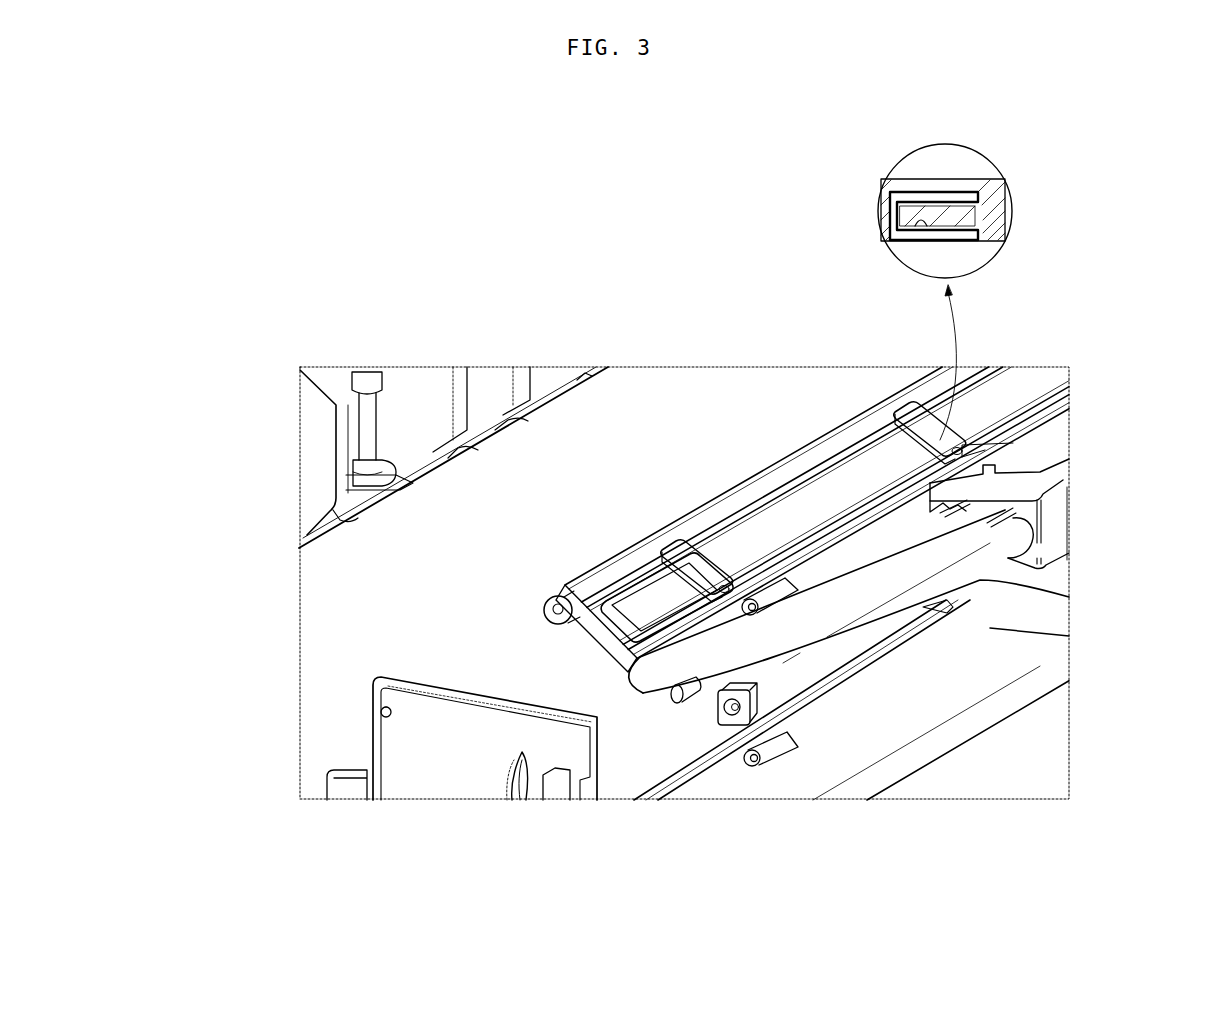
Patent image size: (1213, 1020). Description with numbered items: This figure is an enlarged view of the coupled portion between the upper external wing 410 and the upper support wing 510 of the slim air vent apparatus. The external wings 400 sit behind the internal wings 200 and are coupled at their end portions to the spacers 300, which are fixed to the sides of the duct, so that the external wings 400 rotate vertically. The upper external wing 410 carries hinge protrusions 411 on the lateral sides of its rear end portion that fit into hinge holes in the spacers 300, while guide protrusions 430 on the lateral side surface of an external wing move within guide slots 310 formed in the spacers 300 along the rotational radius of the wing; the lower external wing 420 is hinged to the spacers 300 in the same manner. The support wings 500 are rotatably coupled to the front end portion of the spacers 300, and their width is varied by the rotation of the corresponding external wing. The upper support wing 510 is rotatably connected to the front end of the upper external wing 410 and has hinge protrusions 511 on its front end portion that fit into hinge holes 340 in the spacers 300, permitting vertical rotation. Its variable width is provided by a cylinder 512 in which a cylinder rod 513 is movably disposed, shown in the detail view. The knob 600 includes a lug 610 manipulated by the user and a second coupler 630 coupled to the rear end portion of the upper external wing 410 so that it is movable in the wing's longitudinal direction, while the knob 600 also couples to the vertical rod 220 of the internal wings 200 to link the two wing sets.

The internal wings 200 is at (427, 393).
The vertical rod 220 is at (368, 431).
The spacers 300 is at (428, 770).
The guide slots 310 is at (513, 798).
The hinge holes 340 is at (380, 712).
The external wings 400 is at (952, 759).
The upper external wing 410 is at (907, 553).
The hinge protrusions 411 is at (731, 714).
The lower external wing 420 is at (793, 778).
The guide protrusions 430 is at (675, 703).
The support wings 500 is at (700, 504).
The upper support wing 510 is at (780, 530).
The hinge protrusions 511 is at (546, 611).
The cylinder 512 is at (921, 228).
The cylinder rod 513 is at (939, 205).
The knob 600 is at (1049, 583).
The lug 610 is at (1055, 620).
The second coupler 630 is at (1060, 456).